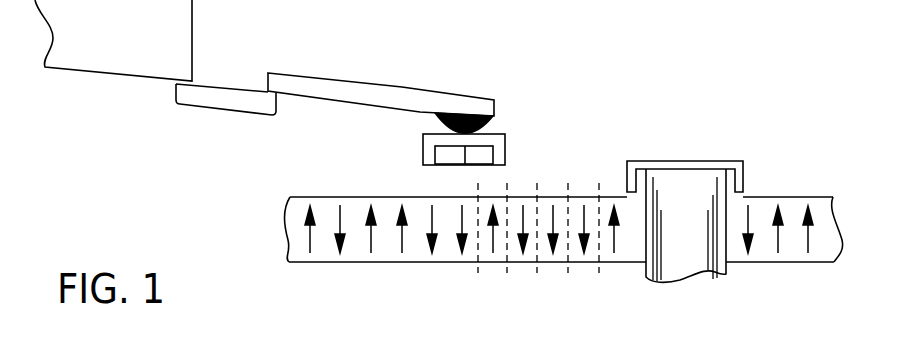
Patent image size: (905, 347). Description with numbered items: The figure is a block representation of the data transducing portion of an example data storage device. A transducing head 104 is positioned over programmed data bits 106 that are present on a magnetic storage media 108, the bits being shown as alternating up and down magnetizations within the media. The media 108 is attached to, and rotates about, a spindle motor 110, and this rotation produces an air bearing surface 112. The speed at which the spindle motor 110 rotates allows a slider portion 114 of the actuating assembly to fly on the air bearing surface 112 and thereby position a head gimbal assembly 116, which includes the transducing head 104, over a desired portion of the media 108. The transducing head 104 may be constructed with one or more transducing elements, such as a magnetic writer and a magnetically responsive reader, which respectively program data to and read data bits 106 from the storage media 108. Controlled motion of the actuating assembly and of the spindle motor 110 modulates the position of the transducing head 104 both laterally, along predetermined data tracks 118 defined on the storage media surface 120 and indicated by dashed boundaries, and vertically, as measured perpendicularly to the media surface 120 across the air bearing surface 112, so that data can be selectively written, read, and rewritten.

The transducing head 104 is at (423, 157).
The programmed data bits 106 is at (433, 258).
The magnetic storage media 108 is at (276, 230).
The spindle motor 110 is at (687, 150).
The air bearing surface 112 is at (505, 170).
The slider portion 114 is at (388, 85).
The head gimbal assembly 116 is at (505, 122).
The data tracks 118 is at (520, 268).
The storage media surface 120 is at (302, 196).